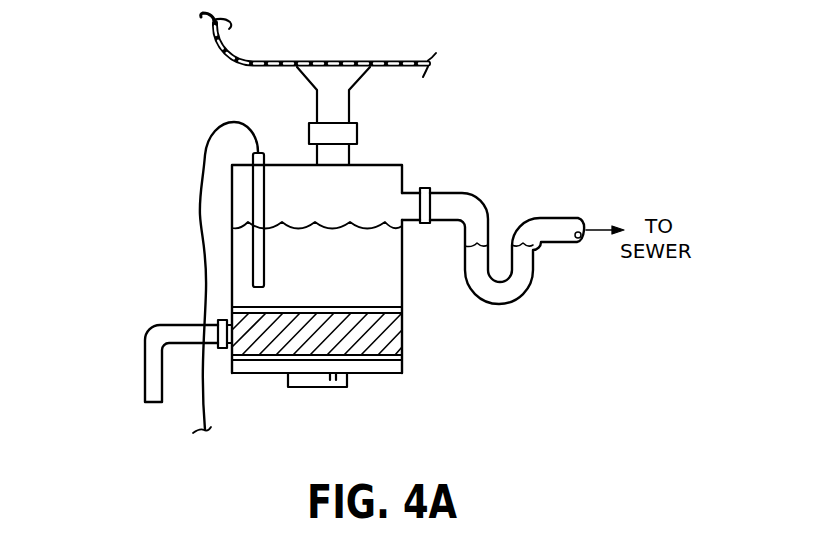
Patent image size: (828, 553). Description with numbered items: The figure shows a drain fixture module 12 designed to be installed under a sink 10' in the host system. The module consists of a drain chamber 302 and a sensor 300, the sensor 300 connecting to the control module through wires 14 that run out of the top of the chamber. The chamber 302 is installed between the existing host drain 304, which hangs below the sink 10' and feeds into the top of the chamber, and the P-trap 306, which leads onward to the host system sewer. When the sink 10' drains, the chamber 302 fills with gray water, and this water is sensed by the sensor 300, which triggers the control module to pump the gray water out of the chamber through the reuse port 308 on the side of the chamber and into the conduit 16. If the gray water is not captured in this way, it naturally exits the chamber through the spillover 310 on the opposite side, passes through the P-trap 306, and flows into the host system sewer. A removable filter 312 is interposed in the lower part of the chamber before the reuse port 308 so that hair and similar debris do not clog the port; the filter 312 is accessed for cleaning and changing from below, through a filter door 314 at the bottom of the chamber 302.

The sink 10' is at (334, 45).
The drain fixture module 12 is at (187, 137).
The wires 14 is at (198, 277).
The conduit 16 is at (153, 359).
The sensor 300 is at (260, 200).
The drain chamber 302 is at (402, 287).
The host drain 304 is at (345, 100).
The P-trap 306 is at (523, 287).
The reuse port 308 is at (225, 349).
The spillover 310 is at (397, 208).
The removable filter 312 is at (398, 338).
The filter door 314 is at (373, 375).